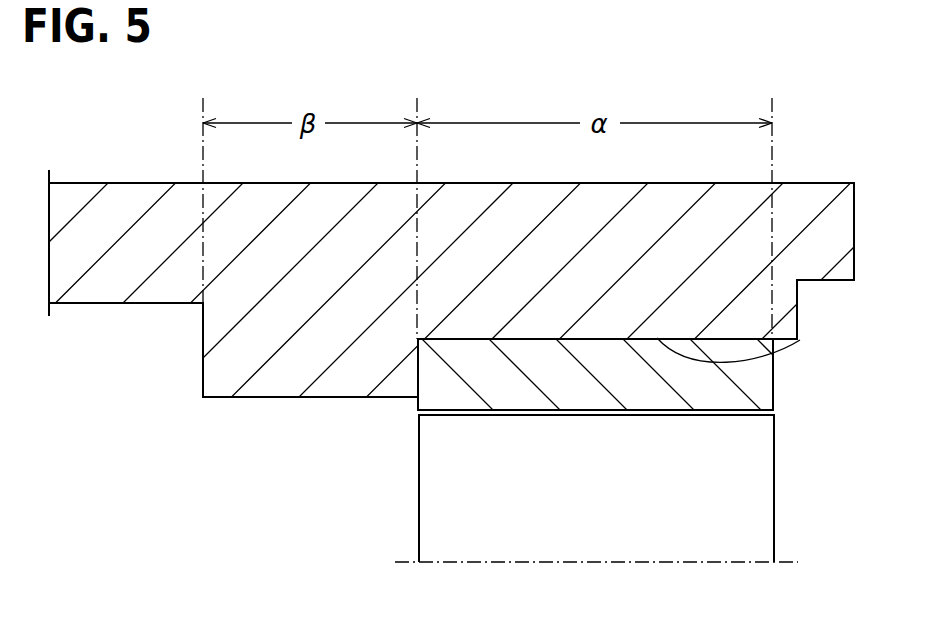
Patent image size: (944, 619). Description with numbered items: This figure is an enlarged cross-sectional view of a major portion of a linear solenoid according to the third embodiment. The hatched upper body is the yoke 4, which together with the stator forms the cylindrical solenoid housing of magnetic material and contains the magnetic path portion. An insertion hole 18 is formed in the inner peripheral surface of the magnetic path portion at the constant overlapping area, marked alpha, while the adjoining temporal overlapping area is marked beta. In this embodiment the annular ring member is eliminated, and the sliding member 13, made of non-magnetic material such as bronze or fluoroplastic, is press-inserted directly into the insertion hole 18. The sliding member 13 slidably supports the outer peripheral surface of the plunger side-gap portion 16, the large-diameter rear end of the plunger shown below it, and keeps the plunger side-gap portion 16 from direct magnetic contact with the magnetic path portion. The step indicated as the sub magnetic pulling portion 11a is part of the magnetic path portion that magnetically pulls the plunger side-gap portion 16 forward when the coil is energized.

The yoke 4 is at (132, 207).
The sliding member 13 is at (752, 384).
The insertion hole 18 is at (800, 340).
The plunger side-gap portion 16 is at (738, 497).
The sub magnetic pulling portion 11a is at (400, 408).